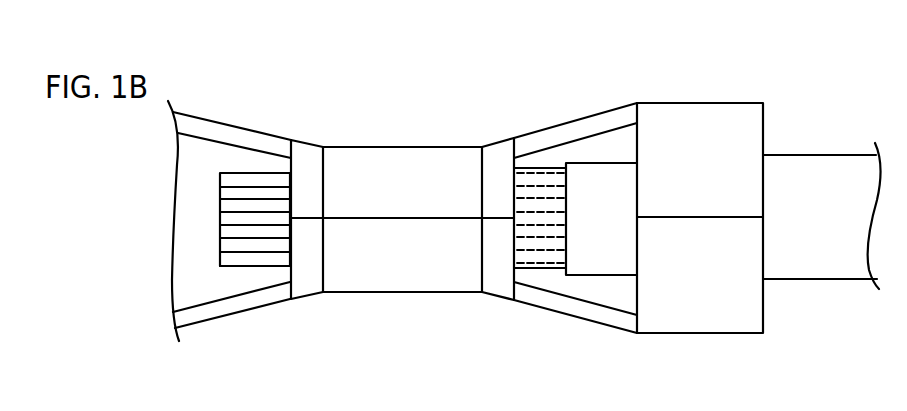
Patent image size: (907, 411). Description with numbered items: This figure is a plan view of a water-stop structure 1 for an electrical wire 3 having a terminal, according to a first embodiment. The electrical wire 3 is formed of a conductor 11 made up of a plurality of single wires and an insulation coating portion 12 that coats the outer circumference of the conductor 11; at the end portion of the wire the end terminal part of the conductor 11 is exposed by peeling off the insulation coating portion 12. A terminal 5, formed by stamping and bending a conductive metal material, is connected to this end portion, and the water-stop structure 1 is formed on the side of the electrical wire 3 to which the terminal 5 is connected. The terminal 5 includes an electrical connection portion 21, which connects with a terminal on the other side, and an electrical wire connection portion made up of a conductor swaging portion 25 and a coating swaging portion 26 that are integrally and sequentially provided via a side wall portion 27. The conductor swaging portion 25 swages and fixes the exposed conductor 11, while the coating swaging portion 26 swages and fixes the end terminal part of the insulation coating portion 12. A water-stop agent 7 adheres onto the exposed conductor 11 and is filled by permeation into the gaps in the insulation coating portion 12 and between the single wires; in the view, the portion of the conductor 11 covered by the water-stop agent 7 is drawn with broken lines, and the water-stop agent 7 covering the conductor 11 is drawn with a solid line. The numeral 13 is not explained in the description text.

The water-stop structure 1 is at (687, 72).
The electrical wire 3 is at (812, 295).
The terminal 5 is at (398, 136).
The water-stop agent 7 is at (532, 167).
The conductor 11 is at (267, 178).
The insulation coating portion 12 is at (593, 175).
The terminal plate 13 is at (236, 180).
The electrical connection portion 21 is at (204, 112).
The conductor swaging portion 25 is at (380, 282).
The coating swaging portion 26 is at (703, 323).
The side wall portion 27 is at (555, 132).